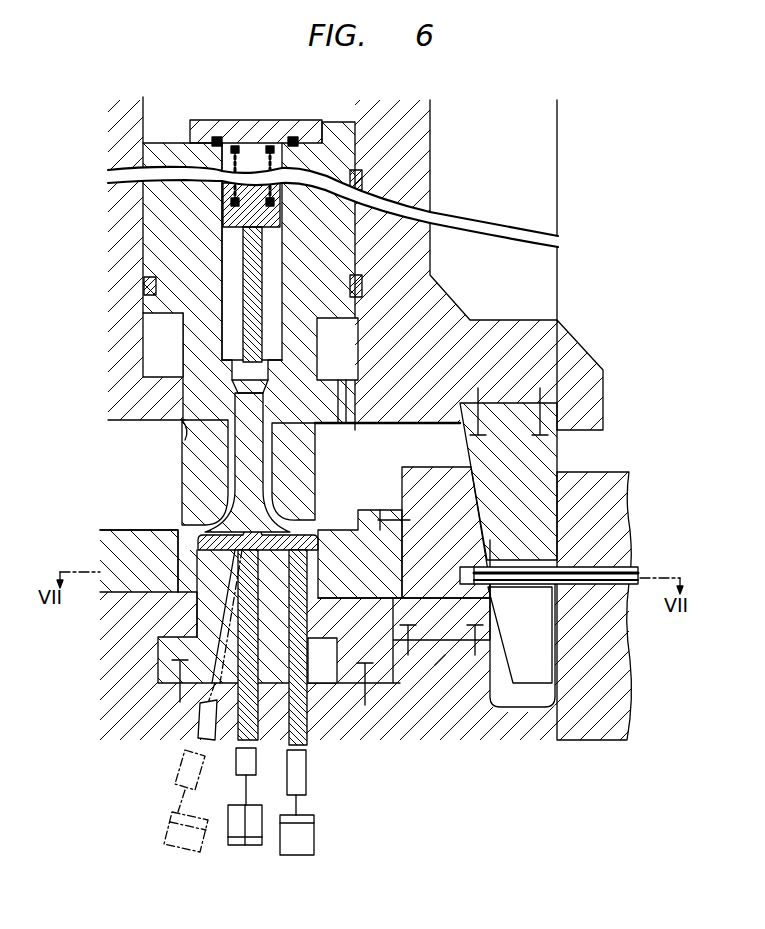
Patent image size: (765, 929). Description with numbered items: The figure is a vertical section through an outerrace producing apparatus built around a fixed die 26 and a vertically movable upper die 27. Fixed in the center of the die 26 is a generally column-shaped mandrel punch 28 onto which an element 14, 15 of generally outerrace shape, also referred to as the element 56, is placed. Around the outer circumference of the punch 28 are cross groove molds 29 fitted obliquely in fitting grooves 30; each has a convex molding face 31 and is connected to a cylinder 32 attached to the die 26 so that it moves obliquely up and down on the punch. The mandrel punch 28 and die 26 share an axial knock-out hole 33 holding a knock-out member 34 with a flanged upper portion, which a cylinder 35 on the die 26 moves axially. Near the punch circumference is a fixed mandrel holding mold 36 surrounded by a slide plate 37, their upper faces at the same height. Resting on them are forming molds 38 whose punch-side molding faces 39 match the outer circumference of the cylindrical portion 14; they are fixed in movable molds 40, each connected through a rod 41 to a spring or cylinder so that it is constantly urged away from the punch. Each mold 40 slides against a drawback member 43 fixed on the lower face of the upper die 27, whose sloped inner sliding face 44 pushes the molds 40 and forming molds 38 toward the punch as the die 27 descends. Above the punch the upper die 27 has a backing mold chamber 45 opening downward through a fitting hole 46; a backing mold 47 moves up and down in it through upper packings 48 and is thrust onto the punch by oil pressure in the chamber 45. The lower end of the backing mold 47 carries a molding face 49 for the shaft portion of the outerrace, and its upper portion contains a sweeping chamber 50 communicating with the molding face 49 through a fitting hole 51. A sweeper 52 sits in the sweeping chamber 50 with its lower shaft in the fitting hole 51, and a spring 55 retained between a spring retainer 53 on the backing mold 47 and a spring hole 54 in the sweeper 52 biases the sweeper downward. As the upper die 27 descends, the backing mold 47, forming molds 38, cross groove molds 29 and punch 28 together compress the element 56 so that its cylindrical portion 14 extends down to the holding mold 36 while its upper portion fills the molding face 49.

The cylindrical portion 14 is at (178, 566).
The element 15 is at (235, 452).
The fixed die 26 is at (630, 490).
The vertically movable die 27 is at (600, 380).
The mandrel punch 28 is at (200, 618).
The cross groove molds 29 is at (322, 750).
The fitting grooves 30 is at (306, 680).
The convex molding face 31 is at (310, 550).
The cylinder 32 is at (172, 822).
The knock-out hole 33 is at (248, 662).
The knock-out member 34 is at (256, 740).
The cylinder 35 is at (240, 845).
The mandrel holding mold 36 is at (108, 654).
The slide plate 37 is at (446, 642).
The forming molds 38 is at (380, 510).
The molding faces 39 is at (310, 579).
The movable molds 40 is at (436, 472).
The rod 41 is at (640, 575).
The drawback member 43 is at (557, 440).
The inner sliding face 44 is at (487, 535).
The backing mold chamber 45 is at (358, 348).
The fitting hole 46 is at (185, 434).
The backing mold 47 is at (143, 241).
The upper packings 48 is at (362, 180).
The molding face 49 is at (272, 440).
The sweeping chamber 50 is at (230, 336).
The fitting hole 51 is at (240, 375).
The sweeper 52 is at (243, 294).
The spring retainer 53 is at (296, 125).
The spring hole 54 is at (232, 213).
The spring 55 is at (236, 142).
The element 56 is at (186, 474).